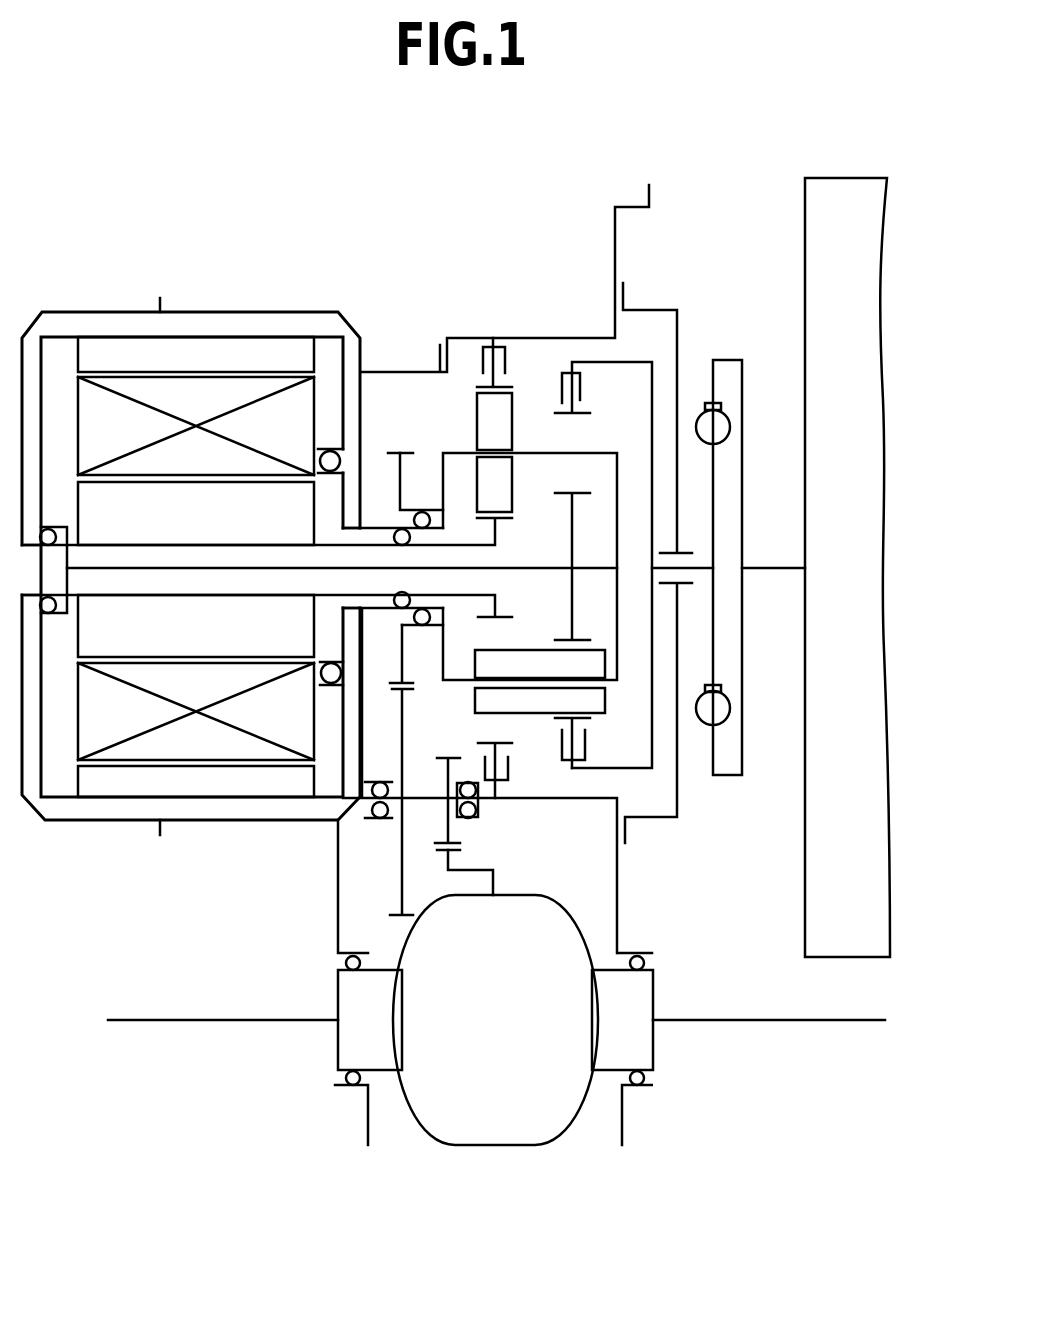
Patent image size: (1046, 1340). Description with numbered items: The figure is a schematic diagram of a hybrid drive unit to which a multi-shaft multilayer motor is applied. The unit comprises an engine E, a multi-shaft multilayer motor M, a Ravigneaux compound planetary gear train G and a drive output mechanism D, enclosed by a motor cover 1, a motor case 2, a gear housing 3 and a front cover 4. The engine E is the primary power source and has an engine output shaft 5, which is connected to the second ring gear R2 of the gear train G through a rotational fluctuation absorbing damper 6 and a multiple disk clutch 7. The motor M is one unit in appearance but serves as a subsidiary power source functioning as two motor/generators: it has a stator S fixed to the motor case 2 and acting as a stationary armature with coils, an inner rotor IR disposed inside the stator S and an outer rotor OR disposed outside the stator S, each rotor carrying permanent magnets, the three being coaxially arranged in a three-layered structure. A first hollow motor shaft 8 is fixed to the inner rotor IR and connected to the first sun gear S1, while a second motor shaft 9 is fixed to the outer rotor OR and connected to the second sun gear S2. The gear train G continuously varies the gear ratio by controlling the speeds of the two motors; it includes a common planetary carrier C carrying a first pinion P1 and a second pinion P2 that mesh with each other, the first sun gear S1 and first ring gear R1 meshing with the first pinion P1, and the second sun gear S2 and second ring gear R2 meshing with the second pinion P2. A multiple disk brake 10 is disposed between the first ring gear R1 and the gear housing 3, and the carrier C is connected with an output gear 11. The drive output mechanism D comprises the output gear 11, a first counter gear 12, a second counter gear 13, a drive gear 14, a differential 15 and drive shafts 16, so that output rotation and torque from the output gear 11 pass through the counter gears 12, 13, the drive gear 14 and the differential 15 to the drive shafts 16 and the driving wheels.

The motor cover 1 is at (97, 312).
The motor case 2 is at (296, 312).
The gear housing 3 is at (565, 338).
The front cover 4 is at (677, 335).
The engine output shaft 5 is at (768, 566).
The rotational fluctuation absorbing damper 6 is at (708, 403).
The multiple disk clutch 7 is at (582, 388).
The first hollow motor shaft 8 is at (455, 545).
The second motor shaft 9 is at (536, 568).
The multiple disk brake 10 is at (483, 365).
The output gear 11 is at (397, 452).
The first counter gear 12 is at (404, 703).
The second counter gear 13 is at (440, 758).
The drive gear 14 is at (455, 858).
The differential 15 is at (495, 1020).
The drive shaft 16 is at (222, 1020).
The multi-shaft multilayer motor M is at (196, 517).
The Ravigneaux compound planetary gear train G is at (520, 523).
The engine E is at (793, 258).
The drive output mechanism D is at (466, 982).
The common planetary carrier C is at (618, 640).
The first ring gear R1 is at (478, 402).
The second ring gear R2 is at (577, 413).
The first sun gear S1 is at (512, 617).
The second sun gear S2 is at (572, 492).
The first pinion P1 is at (512, 415).
The second pinion P2 is at (520, 715).
The outer rotor OR is at (196, 567).
The inner rotor IR is at (196, 569).
The stator S is at (196, 568).